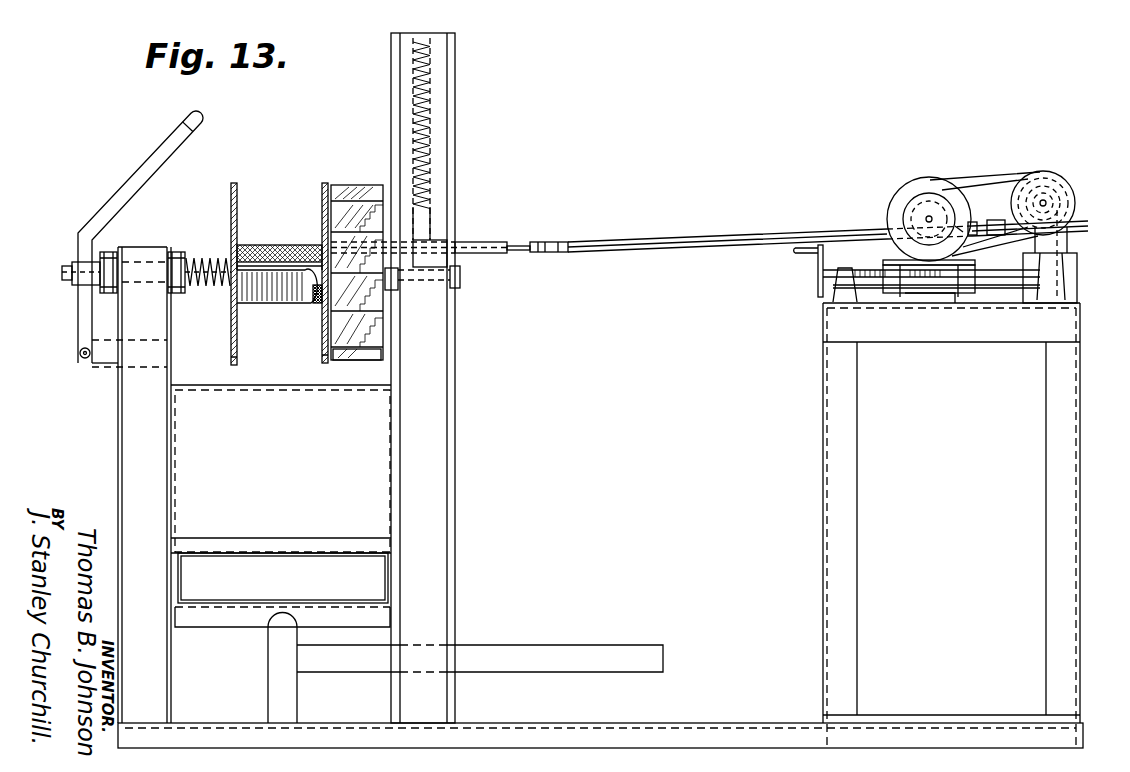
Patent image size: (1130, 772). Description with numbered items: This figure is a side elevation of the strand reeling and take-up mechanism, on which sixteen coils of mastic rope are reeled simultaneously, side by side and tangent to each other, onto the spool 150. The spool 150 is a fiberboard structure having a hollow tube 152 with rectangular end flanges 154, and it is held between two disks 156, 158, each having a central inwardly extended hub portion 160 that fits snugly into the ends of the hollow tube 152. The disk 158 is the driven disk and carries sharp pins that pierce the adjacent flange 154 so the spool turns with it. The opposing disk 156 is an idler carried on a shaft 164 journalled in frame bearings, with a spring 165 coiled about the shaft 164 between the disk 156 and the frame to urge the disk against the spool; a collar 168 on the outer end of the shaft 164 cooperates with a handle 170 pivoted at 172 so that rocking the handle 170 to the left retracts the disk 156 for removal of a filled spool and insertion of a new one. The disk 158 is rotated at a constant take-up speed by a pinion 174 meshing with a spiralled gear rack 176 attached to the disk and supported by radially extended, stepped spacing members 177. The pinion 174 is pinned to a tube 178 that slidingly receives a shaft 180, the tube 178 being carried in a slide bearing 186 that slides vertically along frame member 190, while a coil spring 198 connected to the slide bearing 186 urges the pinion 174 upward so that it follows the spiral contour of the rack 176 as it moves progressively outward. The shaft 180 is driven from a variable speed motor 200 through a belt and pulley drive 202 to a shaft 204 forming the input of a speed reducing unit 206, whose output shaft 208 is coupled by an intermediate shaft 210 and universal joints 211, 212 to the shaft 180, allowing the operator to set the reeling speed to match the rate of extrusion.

The spool 150 is at (266, 258).
The hollow tube 152 is at (275, 290).
The end flanges 154 is at (295, 352).
The idler disk 156 is at (230, 197).
The driven disk 158 is at (335, 184).
The hub portion 160 is at (230, 275).
The shaft 164 is at (143, 262).
The spring 165 is at (208, 266).
The collar 168 is at (72, 276).
The handle 170 is at (118, 196).
The pivot 172 is at (80, 355).
The pinion 174 is at (322, 238).
The spiralled gear rack 176 is at (377, 295).
The spacing members 177 is at (338, 358).
The tube 178 is at (465, 241).
The shaft 180 is at (515, 252).
The slide bearing 186 is at (430, 212).
The frame member 190 is at (441, 33).
The coil spring 198 is at (430, 122).
The variable speed motor 200 is at (910, 190).
The belt and pulley drive 202 is at (989, 175).
The shaft 204 is at (1046, 202).
The speed reducing unit 206 is at (1045, 175).
The output shaft 208 is at (993, 213).
The intermediate shaft 210 is at (745, 235).
The universal joint 211 is at (963, 234).
The universal joint 212 is at (542, 242).